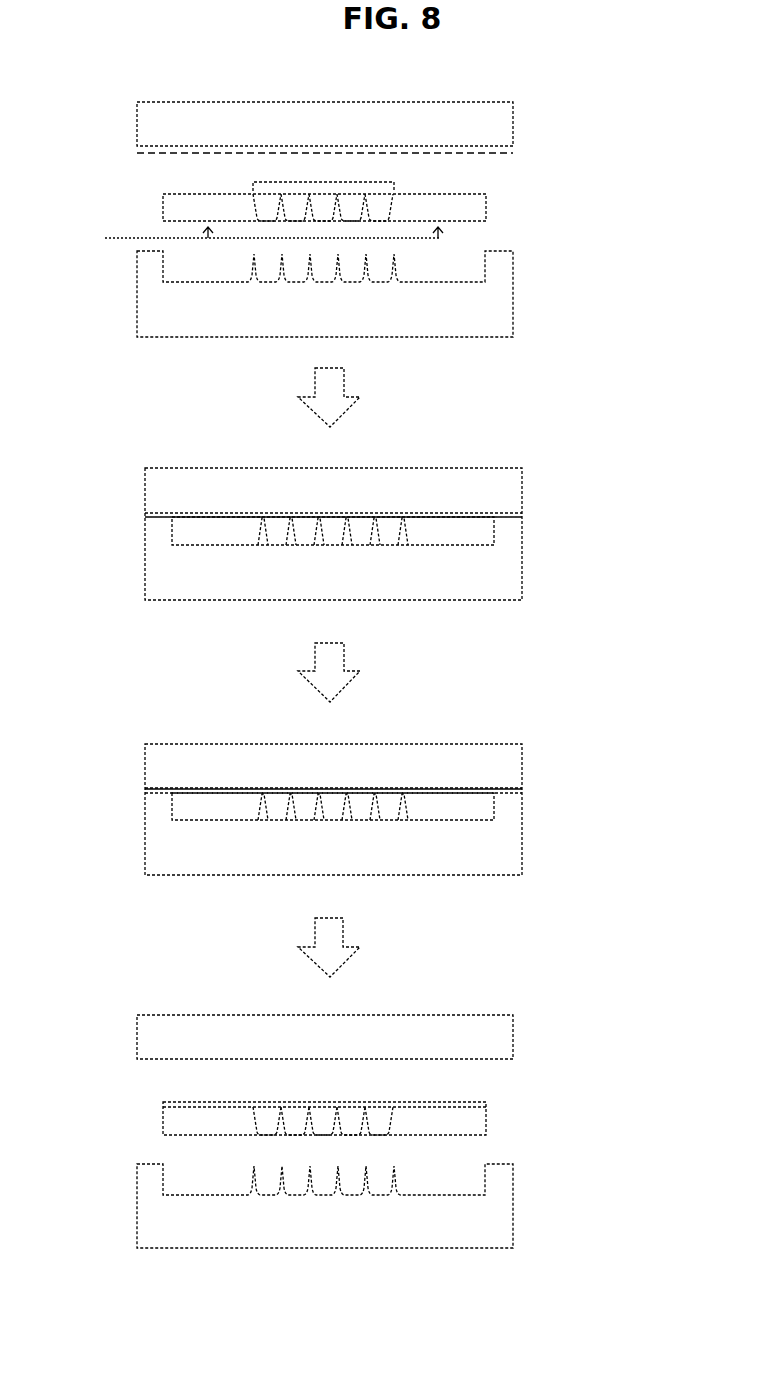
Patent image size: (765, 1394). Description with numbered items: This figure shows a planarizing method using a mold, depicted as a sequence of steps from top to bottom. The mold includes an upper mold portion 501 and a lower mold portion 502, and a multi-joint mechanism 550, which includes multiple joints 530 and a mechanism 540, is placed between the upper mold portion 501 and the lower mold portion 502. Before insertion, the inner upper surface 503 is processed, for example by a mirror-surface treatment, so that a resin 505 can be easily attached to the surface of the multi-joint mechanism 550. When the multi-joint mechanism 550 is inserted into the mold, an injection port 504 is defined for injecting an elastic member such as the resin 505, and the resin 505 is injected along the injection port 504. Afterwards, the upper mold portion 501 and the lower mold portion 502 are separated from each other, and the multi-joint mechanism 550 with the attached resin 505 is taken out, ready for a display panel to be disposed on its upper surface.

The upper mold portion 501 is at (521, 125).
The inner upper surface 503 is at (521, 152).
The joints 530 is at (327, 175).
The multi-joint mechanism 550 is at (496, 207).
The mechanism 540 is at (252, 238).
The lower mold portion 502 is at (521, 293).
The injection port 504 is at (530, 513).
The resin 505 is at (509, 786).